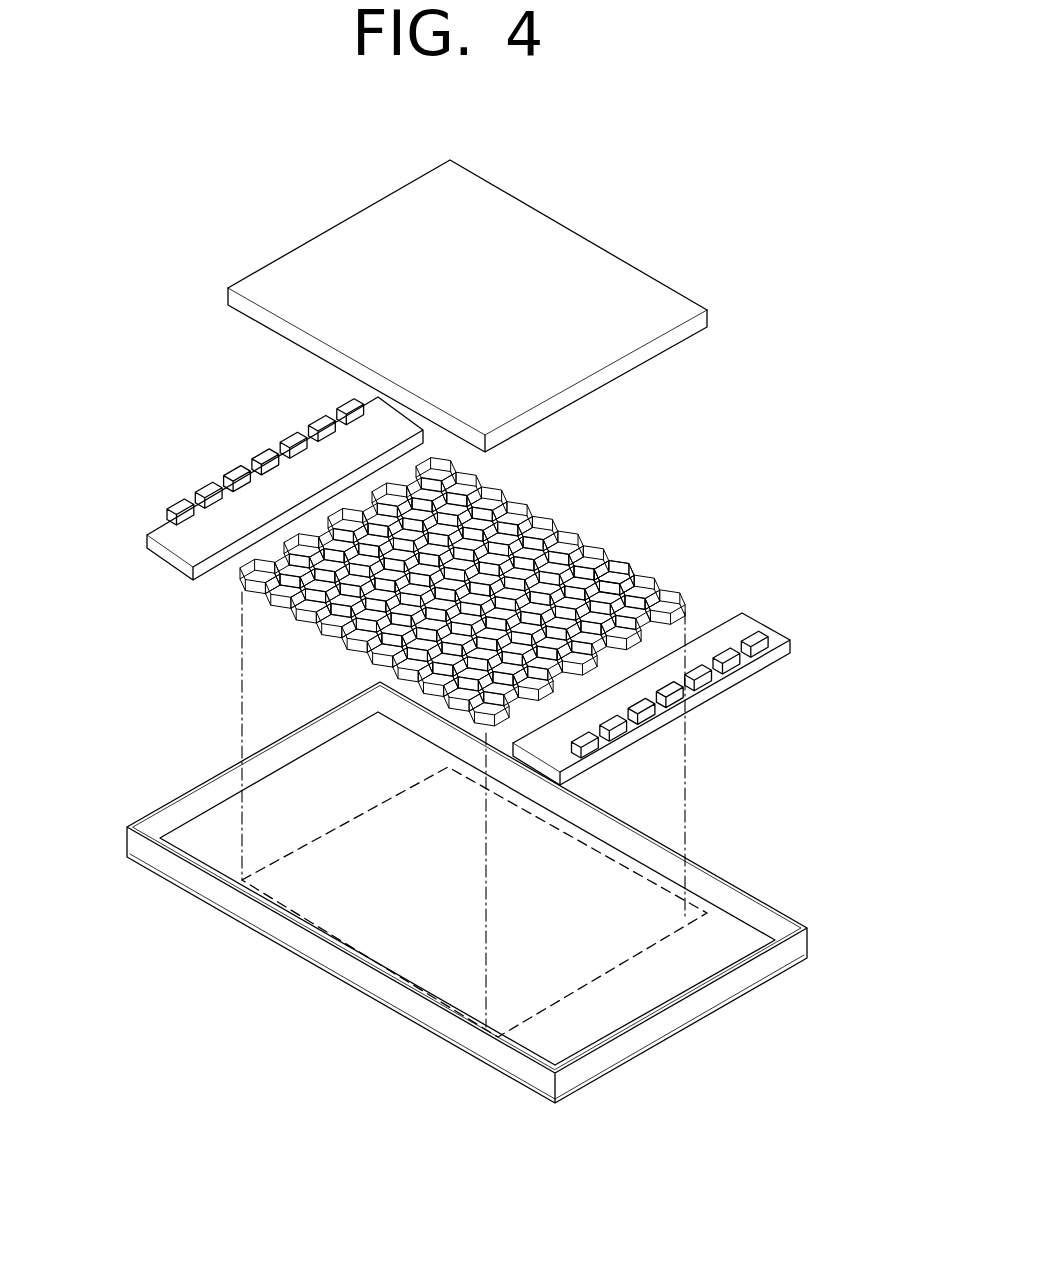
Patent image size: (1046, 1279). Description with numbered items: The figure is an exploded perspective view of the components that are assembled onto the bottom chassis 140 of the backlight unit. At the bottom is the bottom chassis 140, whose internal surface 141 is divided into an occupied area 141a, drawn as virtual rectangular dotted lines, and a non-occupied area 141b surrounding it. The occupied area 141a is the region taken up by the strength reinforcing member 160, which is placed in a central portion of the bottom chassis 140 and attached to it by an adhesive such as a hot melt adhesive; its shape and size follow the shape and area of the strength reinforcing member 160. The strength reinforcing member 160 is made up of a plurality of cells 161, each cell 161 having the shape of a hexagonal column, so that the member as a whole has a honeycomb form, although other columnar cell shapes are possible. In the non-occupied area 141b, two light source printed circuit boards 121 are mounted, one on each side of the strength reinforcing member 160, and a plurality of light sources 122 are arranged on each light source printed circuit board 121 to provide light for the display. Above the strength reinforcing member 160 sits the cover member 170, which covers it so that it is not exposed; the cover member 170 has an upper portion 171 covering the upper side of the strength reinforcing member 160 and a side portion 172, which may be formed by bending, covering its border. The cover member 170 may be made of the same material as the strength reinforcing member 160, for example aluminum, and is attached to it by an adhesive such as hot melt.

The light source printed circuit board 121 is at (461, 591).
The light sources 122 is at (235, 472).
The bottom chassis 140 is at (467, 901).
The internal surface 141 is at (467, 901).
The occupied area 141a is at (383, 930).
The non-occupied area 141b is at (292, 828).
The strength reinforcing member 160 is at (462, 577).
The cell 161 is at (610, 570).
The cover member 170 is at (470, 293).
The upper portion 171 is at (632, 282).
The side portion 172 is at (252, 310).